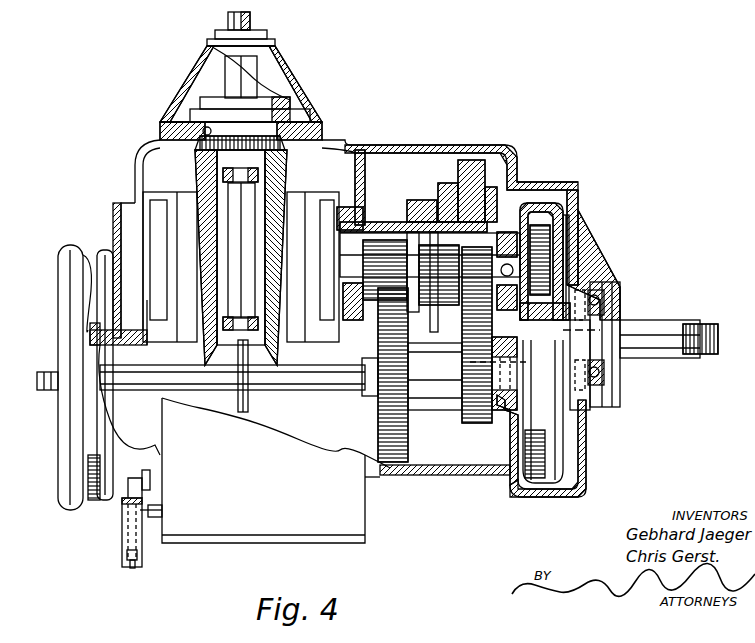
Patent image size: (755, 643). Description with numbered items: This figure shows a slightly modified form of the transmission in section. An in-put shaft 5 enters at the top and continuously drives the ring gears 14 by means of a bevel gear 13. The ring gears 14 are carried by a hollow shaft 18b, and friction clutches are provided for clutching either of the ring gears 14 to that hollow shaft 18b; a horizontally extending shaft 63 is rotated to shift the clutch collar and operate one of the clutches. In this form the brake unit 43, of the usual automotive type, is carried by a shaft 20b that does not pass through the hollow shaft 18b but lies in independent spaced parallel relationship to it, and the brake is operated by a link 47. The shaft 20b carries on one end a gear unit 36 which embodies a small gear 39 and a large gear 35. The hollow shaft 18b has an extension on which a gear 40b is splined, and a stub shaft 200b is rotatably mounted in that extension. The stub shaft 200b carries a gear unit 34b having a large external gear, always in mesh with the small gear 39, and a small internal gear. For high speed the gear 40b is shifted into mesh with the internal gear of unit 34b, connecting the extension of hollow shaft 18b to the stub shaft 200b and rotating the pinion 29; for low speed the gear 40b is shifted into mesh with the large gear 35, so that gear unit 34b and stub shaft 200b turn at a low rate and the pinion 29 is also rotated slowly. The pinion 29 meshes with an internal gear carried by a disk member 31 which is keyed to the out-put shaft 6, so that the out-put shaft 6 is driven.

The in-put shaft 5 is at (250, 22).
The out-put shaft 6 is at (668, 330).
The bevel gear 13 is at (232, 140).
The ring gears 14 is at (260, 176).
The hollow shaft 18b is at (368, 220).
The shaft 20b is at (283, 378).
The pinion 29 is at (547, 233).
The disk member 31 is at (563, 253).
The gear unit 34b is at (472, 160).
The large gear 35 is at (390, 400).
The gear unit 36 is at (432, 395).
The small gear 39 is at (480, 420).
The gear 40b is at (422, 200).
The brake unit 43 is at (60, 298).
The link 47 is at (122, 533).
The shaft 63 is at (242, 392).
The stub shaft 200b is at (445, 340).